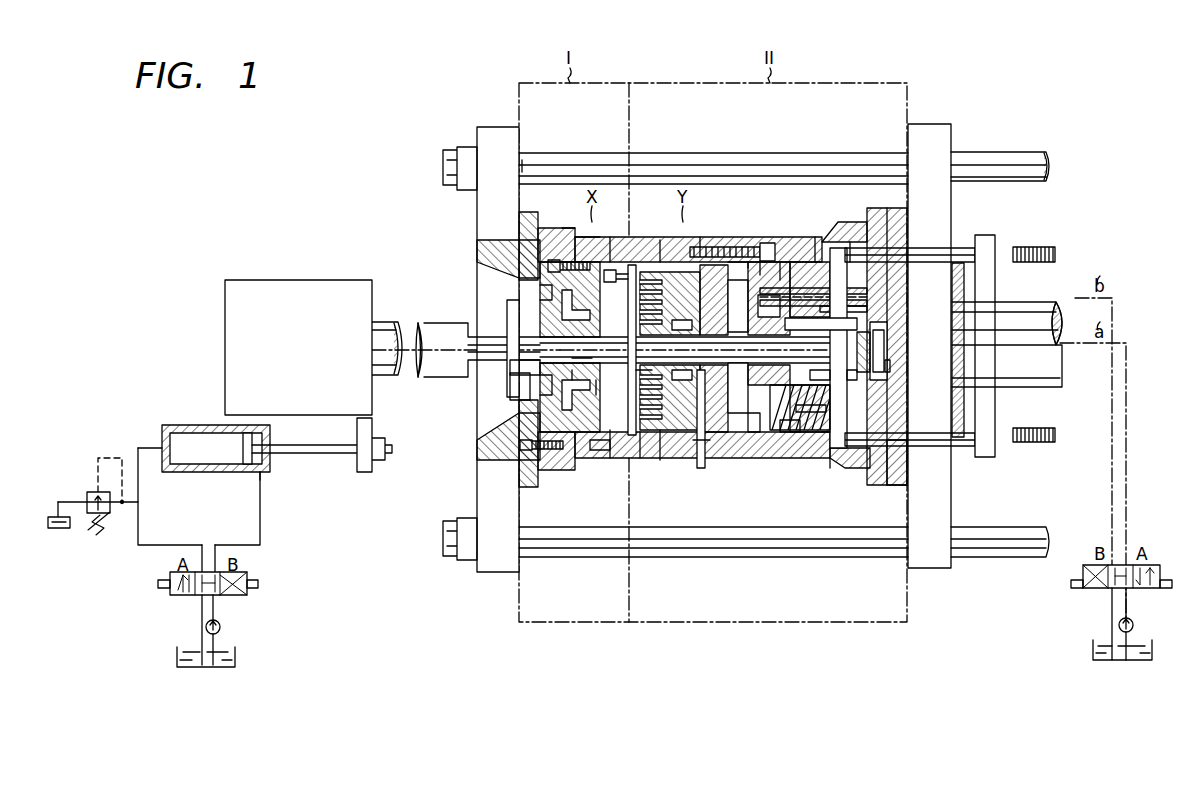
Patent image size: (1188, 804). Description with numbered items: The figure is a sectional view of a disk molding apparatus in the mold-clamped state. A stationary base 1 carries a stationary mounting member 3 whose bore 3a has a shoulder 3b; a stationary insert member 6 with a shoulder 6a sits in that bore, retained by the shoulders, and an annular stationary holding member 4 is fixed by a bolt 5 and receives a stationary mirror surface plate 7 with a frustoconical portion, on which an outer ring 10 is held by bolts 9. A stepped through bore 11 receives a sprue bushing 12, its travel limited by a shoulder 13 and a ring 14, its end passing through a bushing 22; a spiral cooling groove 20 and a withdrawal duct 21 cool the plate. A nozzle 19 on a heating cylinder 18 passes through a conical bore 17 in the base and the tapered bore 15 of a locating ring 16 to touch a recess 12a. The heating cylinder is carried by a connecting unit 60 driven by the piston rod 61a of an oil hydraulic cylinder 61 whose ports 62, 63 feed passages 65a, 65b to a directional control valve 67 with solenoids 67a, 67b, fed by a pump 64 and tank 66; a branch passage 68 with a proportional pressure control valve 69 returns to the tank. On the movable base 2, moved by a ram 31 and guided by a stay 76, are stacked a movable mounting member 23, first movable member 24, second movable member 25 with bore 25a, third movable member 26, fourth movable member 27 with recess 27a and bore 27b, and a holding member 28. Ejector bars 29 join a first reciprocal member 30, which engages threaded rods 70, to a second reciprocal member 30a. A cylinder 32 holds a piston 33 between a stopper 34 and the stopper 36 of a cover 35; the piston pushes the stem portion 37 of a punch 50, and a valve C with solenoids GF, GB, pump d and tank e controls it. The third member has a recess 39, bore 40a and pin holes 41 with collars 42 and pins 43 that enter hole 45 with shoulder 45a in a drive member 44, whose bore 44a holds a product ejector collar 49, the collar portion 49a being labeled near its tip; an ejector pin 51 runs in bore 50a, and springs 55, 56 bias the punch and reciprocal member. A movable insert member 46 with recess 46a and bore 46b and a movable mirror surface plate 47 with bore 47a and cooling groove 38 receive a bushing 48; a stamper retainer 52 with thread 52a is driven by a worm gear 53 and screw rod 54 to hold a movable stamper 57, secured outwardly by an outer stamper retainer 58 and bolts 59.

The stationary base 1 is at (499, 128).
The movable base 2 is at (931, 124).
The stationary mounting member 3 is at (550, 228).
The bore 3a is at (519, 166).
The shoulder 3b is at (570, 226).
The stationary holding member 4 is at (583, 236).
The bolt 5 is at (566, 236).
The stationary insert member 6 is at (529, 214).
The shoulder 6a is at (519, 250).
The stationary mirror surface plate 7 is at (601, 237).
The bolts 9 is at (618, 272).
The outer ring 10 is at (619, 238).
The through bore 11 is at (584, 363).
The sprue bushing 12 is at (564, 396).
The recess 12a is at (517, 375).
The shoulder 13 is at (571, 376).
The ring 14 is at (546, 383).
The tapered conical through bore 15 is at (513, 402).
The locating ring 16 is at (509, 311).
The conical through bore 17 is at (477, 426).
The heating cylinder 18 is at (383, 322).
The nozzle 19 is at (468, 328).
The spiral cooling groove 20 is at (604, 458).
The cooling water withdrawal duct 21 is at (564, 304).
The bushing 22 is at (596, 391).
The movable mounting member 23 is at (897, 209).
The first movable member 24 is at (872, 224).
The second movable member 25 is at (828, 221).
The bore 25a is at (858, 241).
The third movable member 26 is at (816, 242).
The fourth movable member 27 is at (732, 249).
The central recess 27a is at (754, 448).
The through bore 27b is at (706, 456).
The annular movable holding member 28 is at (702, 237).
The ejector bars 29 is at (962, 247).
The first reciprocal member 30 is at (997, 287).
The second reciprocal member 30a is at (856, 468).
The ram 31 is at (1040, 388).
The cylinder 32 is at (882, 372).
The piston 33 is at (892, 332).
The stopper 34 is at (884, 471).
The cover 35 is at (890, 361).
The stopper 36 is at (888, 348).
The stem portion 37 is at (857, 380).
The spiral cooling groove 38 is at (691, 393).
The central recess 39 is at (834, 468).
The through bore 40a is at (824, 448).
The pin holes 41 is at (798, 445).
The cylindrical collar 42 is at (812, 440).
The second pin 43 is at (784, 448).
The drive member 44 is at (772, 452).
The through bore 44a is at (806, 334).
The through hole 45 is at (782, 266).
The shoulder 45a is at (761, 261).
The movable insert member 46 is at (700, 460).
The recess 46a is at (696, 266).
The through bore 46b is at (659, 246).
The movable mirror surface plate 47 is at (676, 450).
The through bore 47a is at (698, 375).
The bushing 48 is at (706, 244).
The product ejector collar 49 is at (736, 280).
The clutch plate portion 49a is at (744, 248).
The punch 50 is at (766, 263).
The longitudinal through bore 50a is at (780, 296).
The ejector pin 51 is at (829, 308).
The stamper retainer 52 is at (635, 268).
The thread 52a is at (666, 467).
The beveled worm gear 53 is at (684, 328).
The screw rod 54 is at (702, 468).
The spring 55 is at (804, 279).
The spring 56 is at (828, 455).
The movable stamper 57 is at (649, 440).
The outer stamper retainer 58 is at (622, 458).
The bolts 59 is at (664, 448).
The connecting unit 60 is at (327, 279).
The oil hydraulic cylinder 61 is at (185, 425).
The piston rod 61a is at (330, 460).
The port 62 is at (260, 472).
The port 63 is at (159, 438).
The oil hydraulic pump 64 is at (222, 628).
The passage 65a is at (268, 545).
The passage 65b is at (138, 545).
The operating fluid tank 66 is at (60, 532).
The 4-port 3-position directional control valve 67 is at (260, 578).
The solenoid 67a is at (164, 596).
The solenoid 67b is at (254, 590).
The branch passage 68 is at (62, 499).
The electromagnetic proportional pressure control valve 69 is at (90, 457).
The threaded rods 70 is at (1032, 245).
The stay 76 is at (987, 152).
The 4-port 3-positional directional control valve C is at (1150, 565).
The solenoid GB is at (1075, 587).
The solenoid GF is at (1166, 587).
The oil hydraulic pump d is at (1134, 625).
The operating fluid tank e is at (1090, 650).